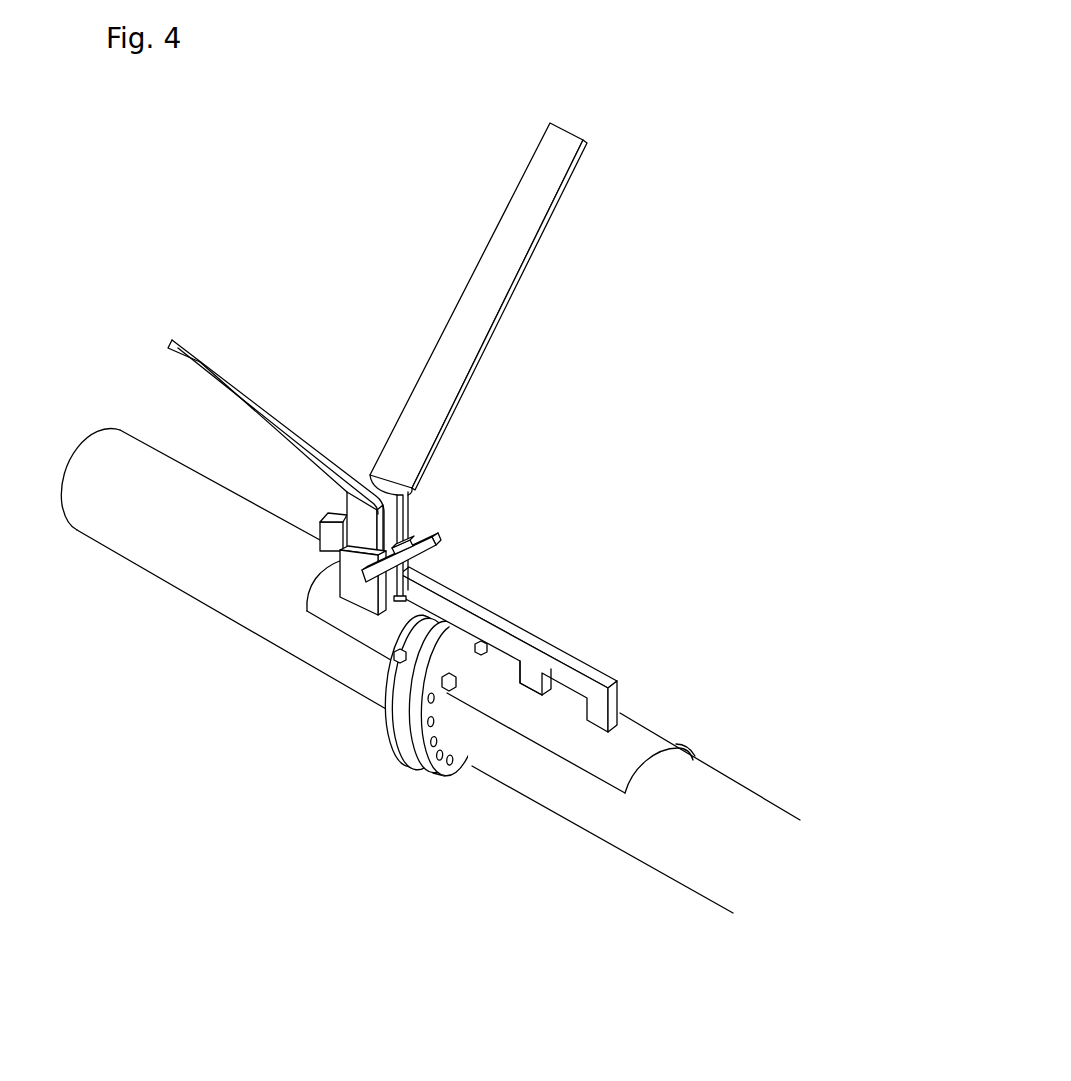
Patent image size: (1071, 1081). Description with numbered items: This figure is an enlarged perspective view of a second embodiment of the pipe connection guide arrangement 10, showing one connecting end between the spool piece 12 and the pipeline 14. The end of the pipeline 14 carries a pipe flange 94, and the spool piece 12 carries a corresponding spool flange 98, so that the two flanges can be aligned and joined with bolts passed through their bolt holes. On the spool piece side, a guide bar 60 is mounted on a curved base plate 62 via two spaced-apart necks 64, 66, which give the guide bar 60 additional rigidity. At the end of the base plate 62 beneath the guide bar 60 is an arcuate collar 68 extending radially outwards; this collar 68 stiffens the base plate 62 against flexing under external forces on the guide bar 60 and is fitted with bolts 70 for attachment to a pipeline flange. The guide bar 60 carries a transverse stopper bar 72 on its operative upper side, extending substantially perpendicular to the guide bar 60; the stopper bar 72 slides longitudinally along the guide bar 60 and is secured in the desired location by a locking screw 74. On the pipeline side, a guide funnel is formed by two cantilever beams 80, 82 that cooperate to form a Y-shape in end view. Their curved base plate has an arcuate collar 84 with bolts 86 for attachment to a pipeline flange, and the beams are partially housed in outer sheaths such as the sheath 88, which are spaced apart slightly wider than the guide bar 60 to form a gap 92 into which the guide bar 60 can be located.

The pipe connection guide arrangement 10 is at (430, 536).
The spool piece 12 is at (688, 833).
The pipeline 14 is at (230, 597).
The guide bar 60 is at (440, 583).
The curved base plate 62 is at (638, 735).
The neck 64 is at (597, 712).
The neck 66 is at (540, 677).
The arcuate collar 68 is at (470, 648).
The bolts 70 is at (458, 673).
The transverse stopper bar 72 is at (410, 543).
The locking screw 74 is at (425, 540).
The cantilever beam 80 is at (227, 375).
The cantilever beam 82 is at (480, 288).
The arcuate collar 84 is at (286, 637).
The bolts 86 is at (400, 657).
The outer sheath 88 is at (360, 588).
The gap 92 is at (362, 452).
The pipe flange 94 is at (403, 733).
The spool flange 98 is at (422, 752).